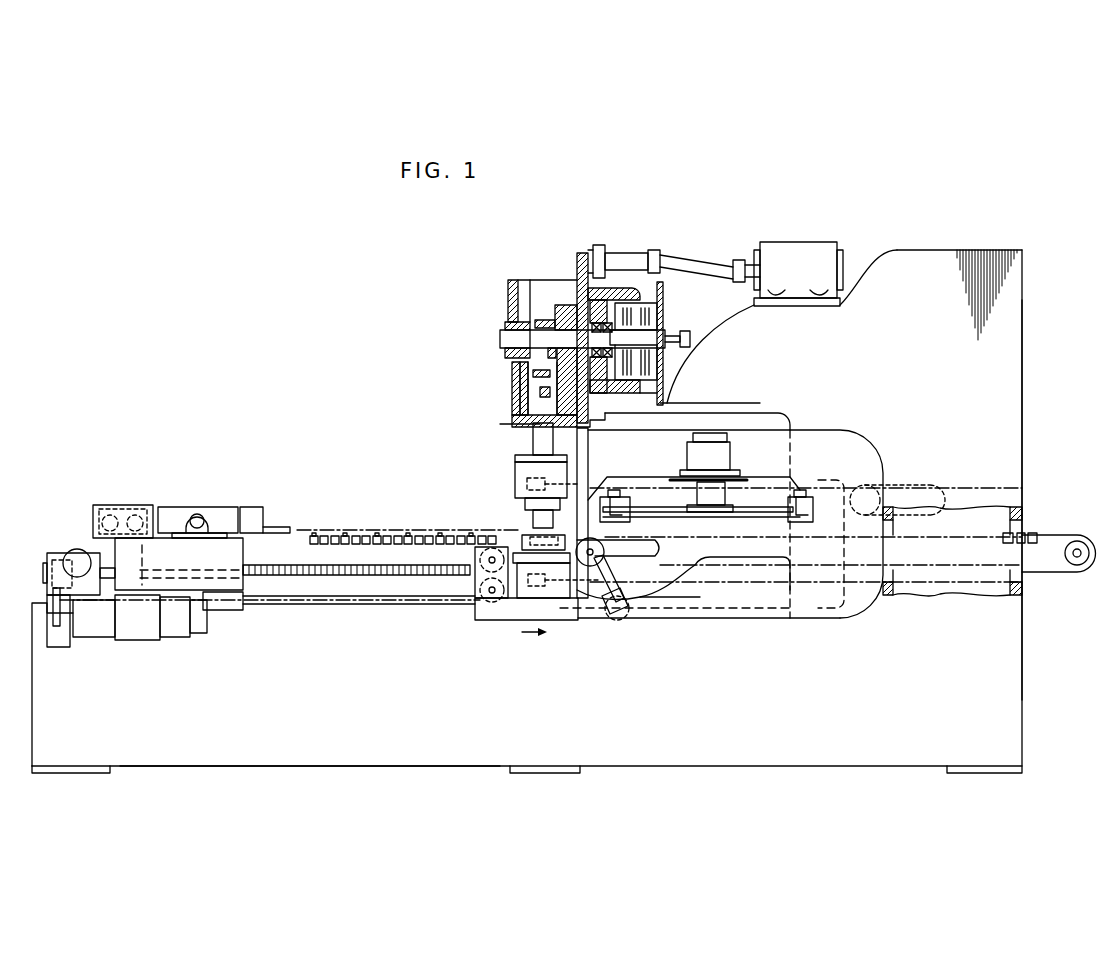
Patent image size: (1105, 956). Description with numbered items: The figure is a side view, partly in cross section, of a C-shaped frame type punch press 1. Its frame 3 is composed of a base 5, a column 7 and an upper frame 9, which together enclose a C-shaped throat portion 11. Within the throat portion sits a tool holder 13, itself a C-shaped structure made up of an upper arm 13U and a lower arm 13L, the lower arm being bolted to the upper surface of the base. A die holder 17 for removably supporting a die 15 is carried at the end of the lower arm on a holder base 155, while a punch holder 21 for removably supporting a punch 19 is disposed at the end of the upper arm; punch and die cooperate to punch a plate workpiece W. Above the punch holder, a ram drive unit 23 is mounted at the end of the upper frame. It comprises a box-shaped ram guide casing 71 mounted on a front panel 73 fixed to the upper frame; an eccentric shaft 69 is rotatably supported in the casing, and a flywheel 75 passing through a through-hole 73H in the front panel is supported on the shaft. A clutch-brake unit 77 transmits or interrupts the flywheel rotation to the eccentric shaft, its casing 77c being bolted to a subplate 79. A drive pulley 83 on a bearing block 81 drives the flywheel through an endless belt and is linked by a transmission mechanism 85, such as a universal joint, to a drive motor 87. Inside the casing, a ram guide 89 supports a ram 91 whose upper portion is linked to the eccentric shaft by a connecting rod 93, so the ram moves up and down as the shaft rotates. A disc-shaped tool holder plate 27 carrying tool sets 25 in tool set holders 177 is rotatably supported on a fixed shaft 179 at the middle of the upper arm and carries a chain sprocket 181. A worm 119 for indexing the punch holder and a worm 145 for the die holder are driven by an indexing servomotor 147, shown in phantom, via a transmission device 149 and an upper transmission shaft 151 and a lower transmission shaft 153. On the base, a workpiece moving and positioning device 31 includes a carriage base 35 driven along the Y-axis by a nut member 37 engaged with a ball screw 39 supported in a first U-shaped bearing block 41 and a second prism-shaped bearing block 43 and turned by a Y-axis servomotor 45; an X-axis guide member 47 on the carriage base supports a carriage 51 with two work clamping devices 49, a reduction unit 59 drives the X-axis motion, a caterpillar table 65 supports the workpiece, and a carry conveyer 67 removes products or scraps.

The punch press 1 is at (966, 246).
The frame 3 is at (1022, 698).
The base 5 is at (665, 768).
The column 7 is at (1022, 380).
The upper frame 9 is at (921, 260).
The C-shaped throat portion 11 is at (758, 413).
The tool holder 13 is at (862, 610).
The upper arm 13U is at (818, 430).
The lower arm 13L is at (708, 620).
The die 15 is at (522, 540).
The die holder 17 is at (560, 595).
The punch 19 is at (530, 520).
The punch holder 21 is at (515, 487).
The ram drive unit 23 is at (508, 279).
The tool set 25 is at (601, 507).
The tool holder plate 27 is at (723, 517).
The workpiece moving and positioning device 31 is at (234, 500).
The carriage base 35 is at (222, 608).
The nut member 37 is at (145, 553).
The ball screw 39 is at (322, 578).
The first U-shaped bearing block 41 is at (484, 615).
The second prism-shaped bearing block 43 is at (58, 553).
The Y-axis servomotor 45 is at (140, 634).
The X-axis guide member 47 is at (200, 512).
The work clamping device 49 is at (268, 508).
The carriage 51 is at (170, 507).
The reduction unit 59 is at (135, 505).
The caterpillar table 65 is at (405, 533).
The carry conveyer 67 is at (1040, 535).
The eccentric shaft 69 is at (510, 340).
The ram guide casing 71 is at (508, 292).
The front panel 73 is at (578, 252).
The through-hole 73H is at (560, 303).
The flywheel 75 is at (640, 295).
The clutch-brake unit 77 is at (657, 370).
The casing 77c is at (663, 305).
The subplate 79 is at (663, 395).
The bearing block 81 is at (630, 256).
The drive pulley 83 is at (601, 246).
The transmission mechanism 85 is at (711, 263).
The drive motor 87 is at (788, 255).
The ram guide 89 is at (512, 383).
The ram 91 is at (512, 408).
The connecting rod 93 is at (512, 372).
The worm 119 is at (527, 482).
The worm 145 is at (547, 595).
The indexing servomotor 147 is at (905, 485).
The transmission device 149 is at (826, 617).
The upper transmission shaft 151 is at (643, 485).
The lower transmission shaft 153 is at (740, 615).
The holder base 155 is at (520, 612).
The tool set holder 177 is at (625, 507).
The fixed shaft 179 is at (700, 462).
The chain sprocket 181 is at (732, 472).
The workpiece W is at (372, 527).